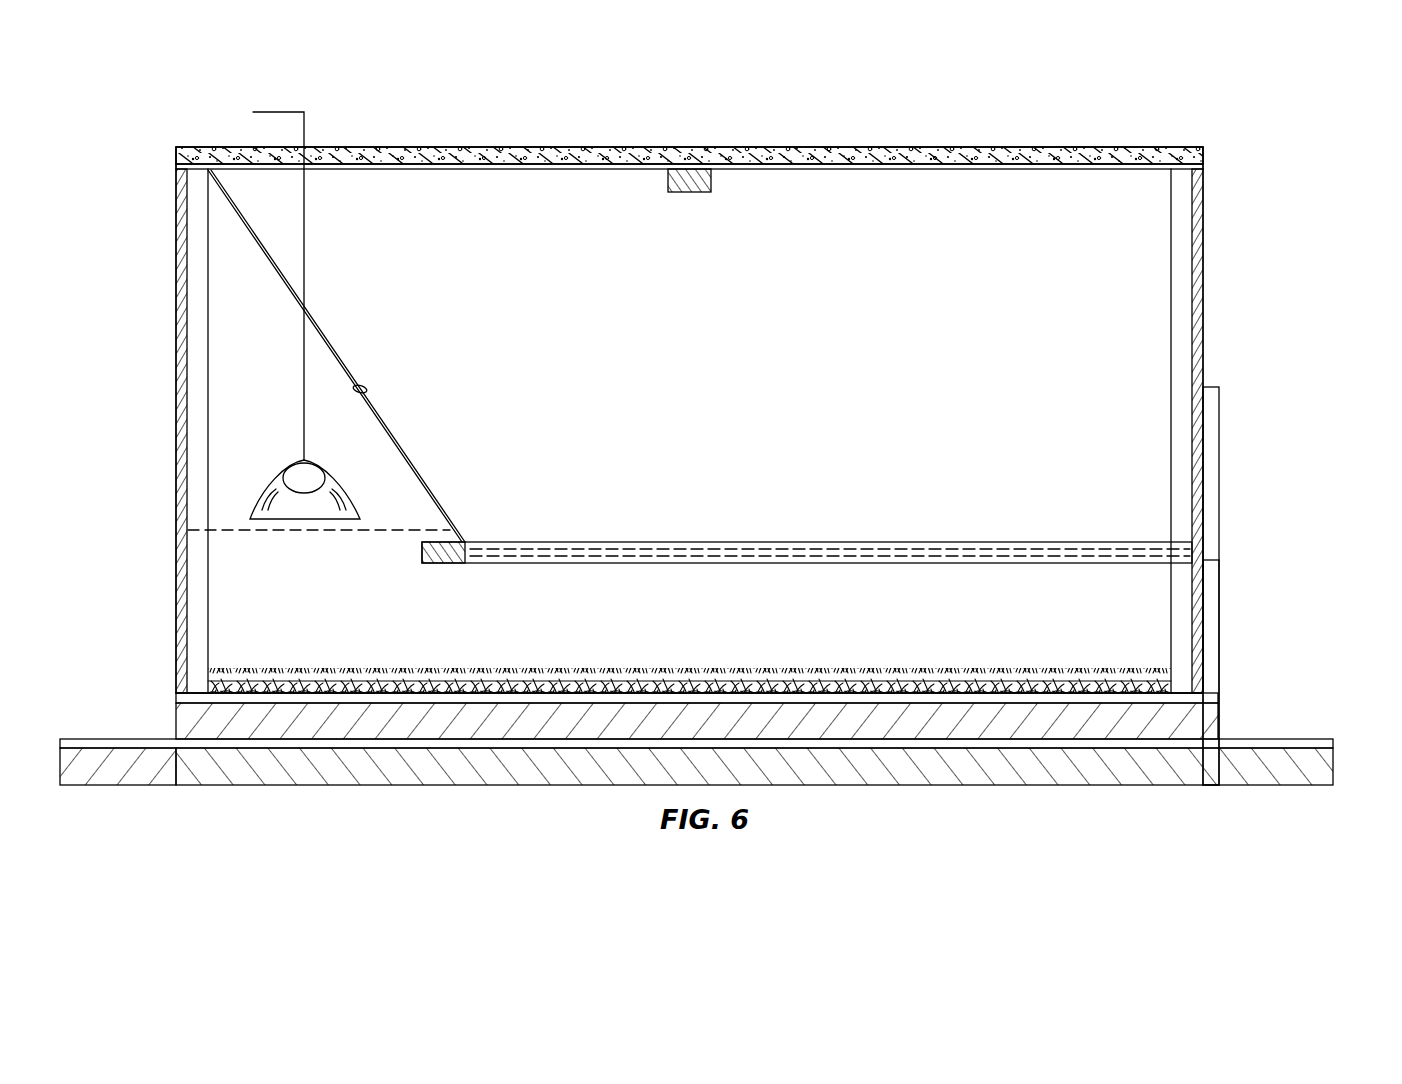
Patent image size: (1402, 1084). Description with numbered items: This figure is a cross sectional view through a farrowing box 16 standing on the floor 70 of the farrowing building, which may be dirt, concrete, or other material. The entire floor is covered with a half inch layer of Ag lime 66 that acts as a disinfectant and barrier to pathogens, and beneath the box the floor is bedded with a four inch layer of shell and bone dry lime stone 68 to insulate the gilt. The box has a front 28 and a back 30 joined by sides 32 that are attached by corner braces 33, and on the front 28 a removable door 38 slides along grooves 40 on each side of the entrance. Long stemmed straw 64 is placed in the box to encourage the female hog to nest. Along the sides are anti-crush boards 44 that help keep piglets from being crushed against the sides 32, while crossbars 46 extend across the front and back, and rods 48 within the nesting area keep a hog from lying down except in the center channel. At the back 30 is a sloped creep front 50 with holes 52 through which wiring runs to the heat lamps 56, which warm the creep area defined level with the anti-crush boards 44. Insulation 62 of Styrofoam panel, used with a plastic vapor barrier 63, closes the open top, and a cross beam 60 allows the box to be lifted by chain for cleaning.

The farrowing box 16 is at (343, 77).
The front 28 is at (1205, 203).
The back 30 is at (176, 305).
The sides 32 is at (712, 341).
The corner braces 33 is at (193, 166).
The removable door 38 is at (1209, 595).
The grooves 40 is at (1209, 421).
The anti-crush boards 44 is at (681, 541).
The crossbars 46 is at (447, 563).
The rods 48 is at (625, 557).
The sloped creep front 50 is at (368, 388).
The holes 52 is at (308, 308).
The heat lamps 56 is at (283, 478).
The cross beam 60 is at (712, 181).
The insulation 62 is at (833, 148).
The plastic vapor barrier 63 is at (960, 168).
The straw 64 is at (681, 668).
The Ag lime layer 66 is at (1333, 744).
The lime stone layer 68 is at (1215, 721).
The floor 70 is at (1333, 762).